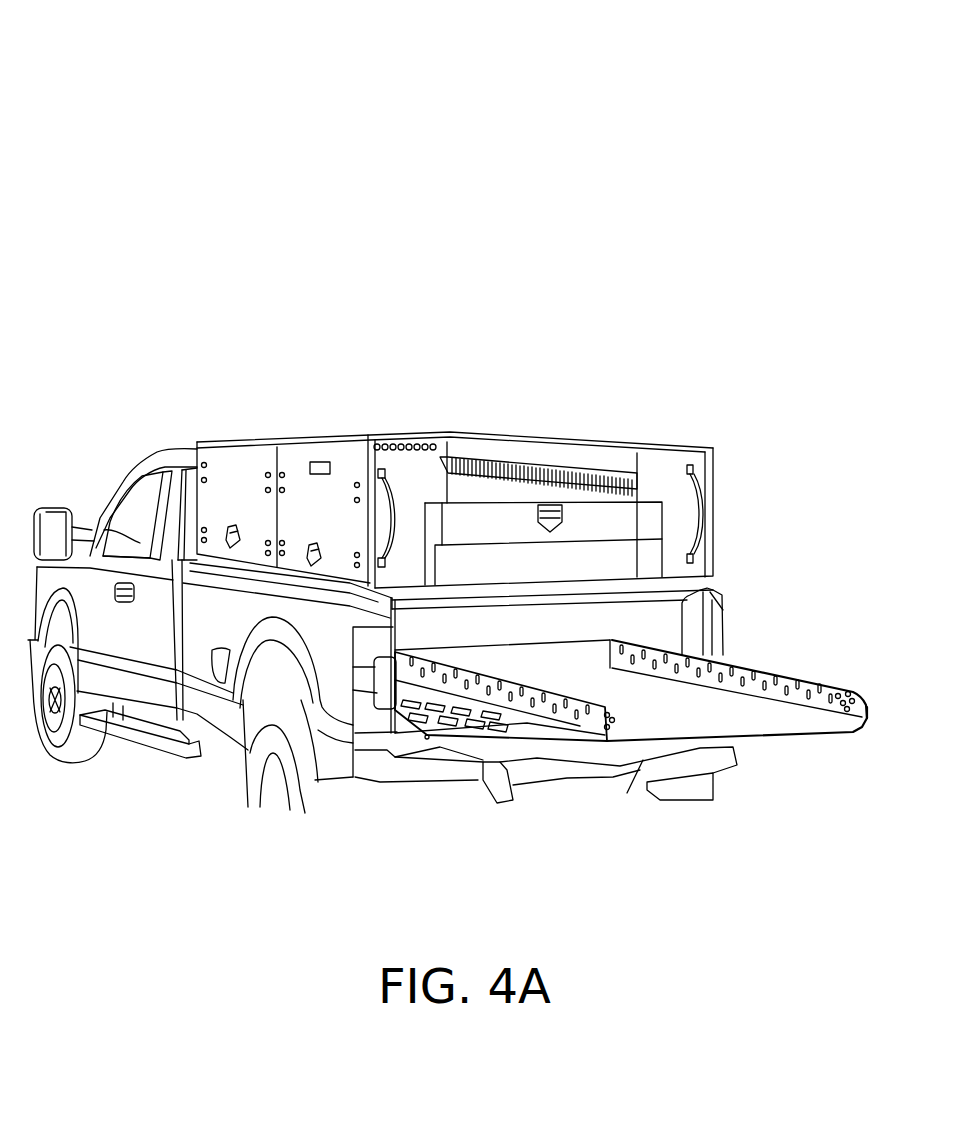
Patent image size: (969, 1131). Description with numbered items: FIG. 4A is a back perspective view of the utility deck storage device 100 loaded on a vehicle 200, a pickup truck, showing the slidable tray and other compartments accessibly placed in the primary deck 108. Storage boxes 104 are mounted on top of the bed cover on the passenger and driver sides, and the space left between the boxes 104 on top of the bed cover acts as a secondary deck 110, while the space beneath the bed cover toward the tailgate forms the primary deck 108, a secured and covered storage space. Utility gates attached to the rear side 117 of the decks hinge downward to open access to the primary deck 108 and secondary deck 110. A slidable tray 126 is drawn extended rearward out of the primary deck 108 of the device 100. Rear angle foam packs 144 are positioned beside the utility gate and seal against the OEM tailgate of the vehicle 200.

The utility deck storage device 100 is at (196, 137).
The vehicle 200 is at (124, 473).
The storage boxes 104 is at (247, 468).
The secondary deck 110 is at (480, 478).
The rear side 117 is at (672, 521).
The rear angle foam packs 144 is at (687, 617).
The primary deck 108 is at (525, 620).
The slidable trays 126 is at (780, 660).